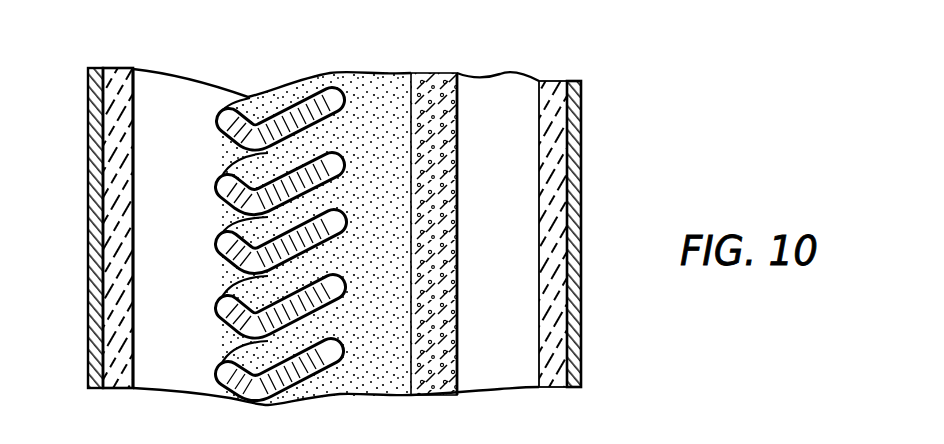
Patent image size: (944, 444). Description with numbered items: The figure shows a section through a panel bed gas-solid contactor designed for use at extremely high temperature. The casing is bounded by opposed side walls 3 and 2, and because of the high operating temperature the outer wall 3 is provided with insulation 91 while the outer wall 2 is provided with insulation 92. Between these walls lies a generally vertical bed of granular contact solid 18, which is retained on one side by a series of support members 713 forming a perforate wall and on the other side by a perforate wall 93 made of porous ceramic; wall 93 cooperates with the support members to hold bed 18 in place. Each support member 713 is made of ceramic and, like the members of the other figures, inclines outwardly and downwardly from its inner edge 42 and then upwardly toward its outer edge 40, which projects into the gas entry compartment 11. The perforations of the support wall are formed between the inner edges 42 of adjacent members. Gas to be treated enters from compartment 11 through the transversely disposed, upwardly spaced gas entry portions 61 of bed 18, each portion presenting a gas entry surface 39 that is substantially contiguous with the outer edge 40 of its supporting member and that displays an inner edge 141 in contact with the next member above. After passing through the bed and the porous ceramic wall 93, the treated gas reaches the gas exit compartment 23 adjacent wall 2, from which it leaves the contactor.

The side wall 2 is at (582, 195).
The side wall 3 is at (88, 180).
The gas entry compartment 11 is at (145, 238).
The bed of granular contact solid 18 is at (376, 381).
The gas exit compartment 23 is at (492, 373).
The gas entry surface 39 is at (235, 352).
The outer edge 40 is at (216, 113).
The inner edge 42 is at (343, 105).
The gas entry portion 61 is at (227, 318).
The insulation 91 is at (122, 68).
The insulation 92 is at (555, 82).
The perforate wall 93 is at (430, 73).
The inner edge of gas entry face 141 is at (255, 214).
The support member 713 is at (223, 263).